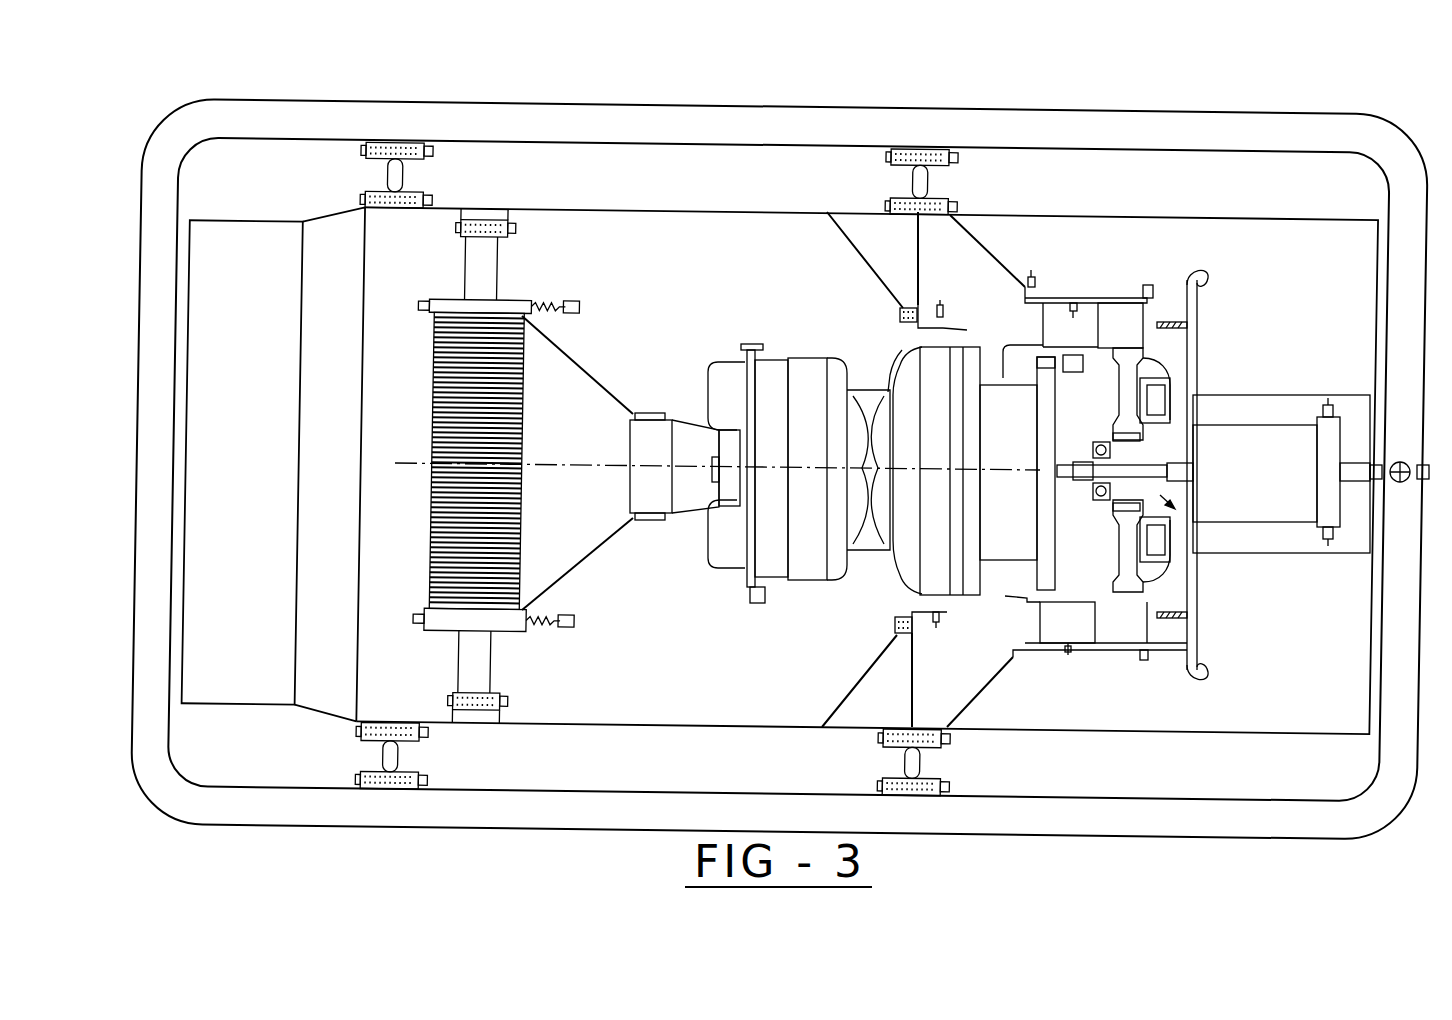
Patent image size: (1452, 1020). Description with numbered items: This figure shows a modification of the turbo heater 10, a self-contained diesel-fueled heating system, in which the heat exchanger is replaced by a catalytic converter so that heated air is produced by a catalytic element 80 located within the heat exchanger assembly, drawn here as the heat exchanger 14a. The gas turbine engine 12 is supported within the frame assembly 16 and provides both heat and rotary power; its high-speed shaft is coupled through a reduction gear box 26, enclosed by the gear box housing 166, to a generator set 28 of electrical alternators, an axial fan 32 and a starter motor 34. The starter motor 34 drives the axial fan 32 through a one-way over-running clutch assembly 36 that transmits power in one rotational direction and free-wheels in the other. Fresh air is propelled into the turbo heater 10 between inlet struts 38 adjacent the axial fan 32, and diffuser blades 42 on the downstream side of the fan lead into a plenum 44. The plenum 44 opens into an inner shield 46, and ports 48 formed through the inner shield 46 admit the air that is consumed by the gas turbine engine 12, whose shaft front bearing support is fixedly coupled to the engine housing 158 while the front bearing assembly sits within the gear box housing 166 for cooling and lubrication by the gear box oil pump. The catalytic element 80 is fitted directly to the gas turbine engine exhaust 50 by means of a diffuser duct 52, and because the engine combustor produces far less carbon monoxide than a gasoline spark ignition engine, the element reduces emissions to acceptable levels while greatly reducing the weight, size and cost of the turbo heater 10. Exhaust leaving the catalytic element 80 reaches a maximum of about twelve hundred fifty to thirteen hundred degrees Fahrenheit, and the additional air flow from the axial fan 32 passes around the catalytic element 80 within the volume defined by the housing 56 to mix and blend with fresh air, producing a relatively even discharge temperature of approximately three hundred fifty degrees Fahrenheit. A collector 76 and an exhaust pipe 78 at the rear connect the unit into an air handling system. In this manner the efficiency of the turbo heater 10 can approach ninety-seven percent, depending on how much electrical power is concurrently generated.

The turbo heater 10 is at (1438, 80).
The gas turbine engine 12 is at (840, 645).
The air-to-air heat exchanger 14a is at (587, 600).
The frame assembly 16 is at (858, 788).
The gear box 26 is at (883, 590).
The generator set 28 is at (1004, 372).
The axial fan 32 is at (1110, 334).
The starter motor 34 is at (1242, 484).
The one-way over-running clutch assembly 36 is at (1193, 540).
The inlet struts 38 is at (1153, 630).
The diffuser blades 42 is at (1052, 630).
The plenum 44 is at (990, 295).
The inner shield 46 is at (1007, 597).
The ports 48 is at (963, 611).
The gas turbine engine exhaust 50 is at (693, 518).
The diffuser duct 52 is at (592, 368).
The housing 56 is at (675, 212).
The collector 76 is at (342, 575).
The exhaust pipe 78 is at (257, 399).
The catalytic element 80 is at (433, 382).
The engine housing 158 is at (790, 427).
The gear box housing 166 is at (902, 350).